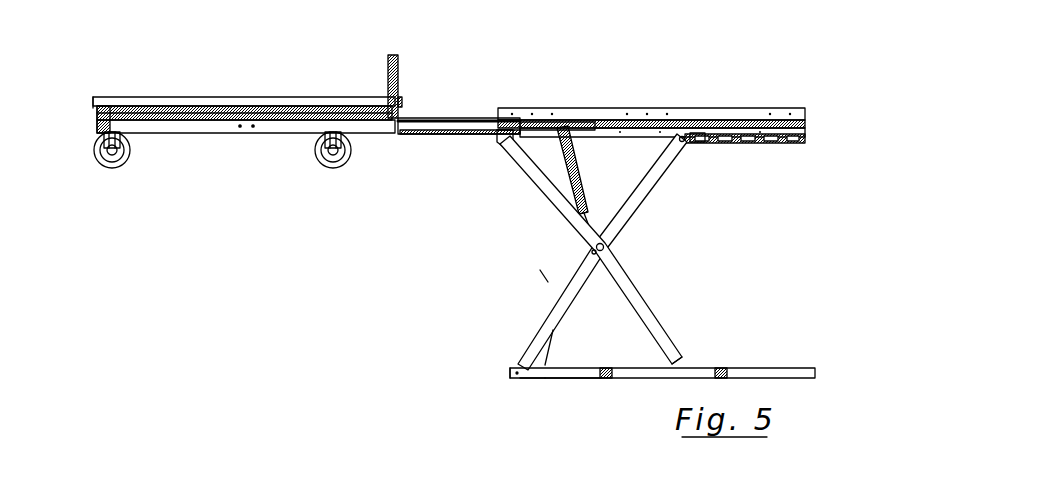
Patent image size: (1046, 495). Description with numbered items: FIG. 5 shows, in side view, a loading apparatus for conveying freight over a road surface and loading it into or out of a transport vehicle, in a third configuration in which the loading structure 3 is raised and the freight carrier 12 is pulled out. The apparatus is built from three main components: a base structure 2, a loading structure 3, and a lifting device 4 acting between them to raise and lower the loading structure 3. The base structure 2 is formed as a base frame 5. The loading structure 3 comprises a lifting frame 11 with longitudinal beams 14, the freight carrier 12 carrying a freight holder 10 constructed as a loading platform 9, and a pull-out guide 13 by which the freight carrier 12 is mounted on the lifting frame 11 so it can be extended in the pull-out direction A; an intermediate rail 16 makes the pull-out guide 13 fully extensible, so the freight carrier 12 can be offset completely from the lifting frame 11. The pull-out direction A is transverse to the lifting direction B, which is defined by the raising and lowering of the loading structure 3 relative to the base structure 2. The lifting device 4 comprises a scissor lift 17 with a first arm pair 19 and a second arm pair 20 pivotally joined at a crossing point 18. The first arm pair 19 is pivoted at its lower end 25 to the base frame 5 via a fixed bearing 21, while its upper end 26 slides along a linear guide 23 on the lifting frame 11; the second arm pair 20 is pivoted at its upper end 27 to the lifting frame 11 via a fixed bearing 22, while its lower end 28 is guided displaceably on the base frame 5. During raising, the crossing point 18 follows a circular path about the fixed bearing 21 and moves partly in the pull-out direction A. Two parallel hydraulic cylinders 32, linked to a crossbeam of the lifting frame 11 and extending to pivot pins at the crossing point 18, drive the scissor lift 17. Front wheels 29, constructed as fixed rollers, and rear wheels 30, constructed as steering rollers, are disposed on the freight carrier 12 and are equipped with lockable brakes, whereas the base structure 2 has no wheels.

The base structure 2 is at (566, 402).
The loading structure 3 is at (372, 194).
The lifting device 4 is at (512, 290).
The base frame 5 is at (817, 367).
The loading platform 9 is at (255, 97).
The freight holder 10 is at (163, 100).
The lifting frame 11 is at (780, 88).
The freight carrier 12 is at (88, 72).
The pull-out guide 13 is at (493, 82).
The longitudinal beams 14 is at (700, 113).
The intermediate rail 16 is at (470, 135).
The scissor lift 17 is at (655, 243).
The crossing point 18 is at (590, 247).
The first arm pair 19 is at (535, 378).
The second arm pair 20 is at (647, 340).
The fixed bearing 21 is at (553, 330).
The fixed bearing 22 is at (502, 186).
The linear guide 23 is at (738, 162).
The lower end 25 is at (506, 368).
The upper end 26 is at (682, 177).
The upper end 27 is at (488, 230).
The lower end 28 is at (690, 357).
The front wheels 29 is at (112, 167).
The rear wheels 30 is at (320, 160).
The hydraulic cylinders 32 is at (576, 167).
The pull-out direction A is at (368, 42).
The lifting direction B is at (728, 298).